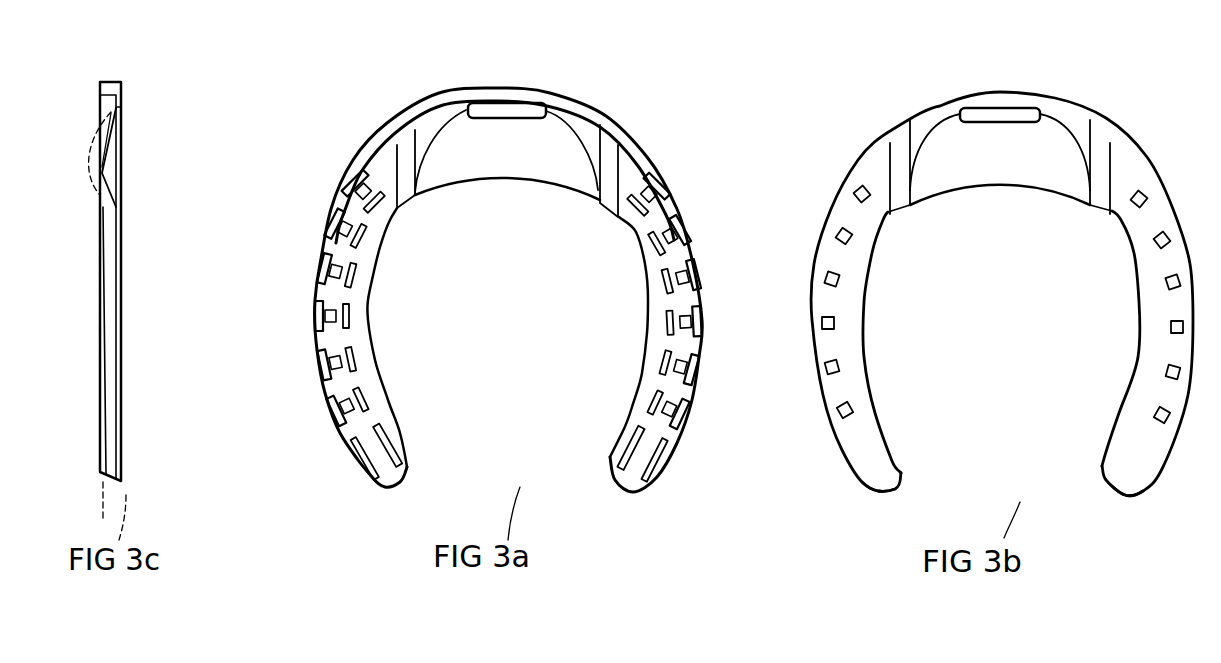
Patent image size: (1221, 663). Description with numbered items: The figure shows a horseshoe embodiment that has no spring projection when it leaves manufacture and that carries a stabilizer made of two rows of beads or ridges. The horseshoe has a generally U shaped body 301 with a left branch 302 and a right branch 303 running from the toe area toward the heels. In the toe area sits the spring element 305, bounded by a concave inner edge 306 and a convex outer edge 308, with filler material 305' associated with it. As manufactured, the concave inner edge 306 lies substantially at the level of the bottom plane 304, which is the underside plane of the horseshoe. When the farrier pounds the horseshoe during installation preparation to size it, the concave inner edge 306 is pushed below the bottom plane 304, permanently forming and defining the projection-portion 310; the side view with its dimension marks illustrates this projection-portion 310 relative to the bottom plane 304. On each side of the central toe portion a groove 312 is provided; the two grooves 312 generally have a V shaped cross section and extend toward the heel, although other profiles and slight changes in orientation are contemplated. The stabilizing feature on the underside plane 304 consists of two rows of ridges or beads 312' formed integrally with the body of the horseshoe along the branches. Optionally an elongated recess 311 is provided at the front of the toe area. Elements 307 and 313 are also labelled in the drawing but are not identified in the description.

In FIG. 3A, the U shaped body 301 is at (677, 212).
In FIG. 3B, the U shaped body 301 is at (836, 214).
In FIG. 3A, the left branch 302 is at (363, 474).
In FIG. 3B, the left branch 302 is at (896, 476).
In FIG. 3A, the right branch 303 is at (633, 490).
In FIG. 3B, the right branch 303 is at (1107, 480).
In FIG. 3C, the bottom plane 304 is at (100, 82).
In FIG. 3A, the spring element 305 is at (560, 122).
In FIG. 3C, the filler material 305' is at (149, 157).
In FIG. 3A, the concave inner edge 306 is at (507, 180).
In FIG. 3B, the concave inner edge 306 is at (1009, 186).
In FIG. 3A, the nail holes 307 is at (684, 315).
In FIG. 3B, the nail holes 307 is at (823, 277).
In FIG. 3A, the convex outer edge 308 is at (442, 134).
In FIG. 3B, the convex outer edge 308 is at (937, 130).
In FIG. 3C, the projection-portion 310 is at (84, 180).
In FIG. 3A, the elongated recess 311 is at (527, 102).
In FIG. 3B, the elongated recess 311 is at (1010, 110).
In FIG. 3A, the grooves 312 is at (505, 166).
In FIG. 3B, the grooves 312 is at (991, 166).
In FIG. 3A, the ridges or beads 312' is at (508, 300).
In FIG. 3A, the outer rim 313 is at (492, 87).